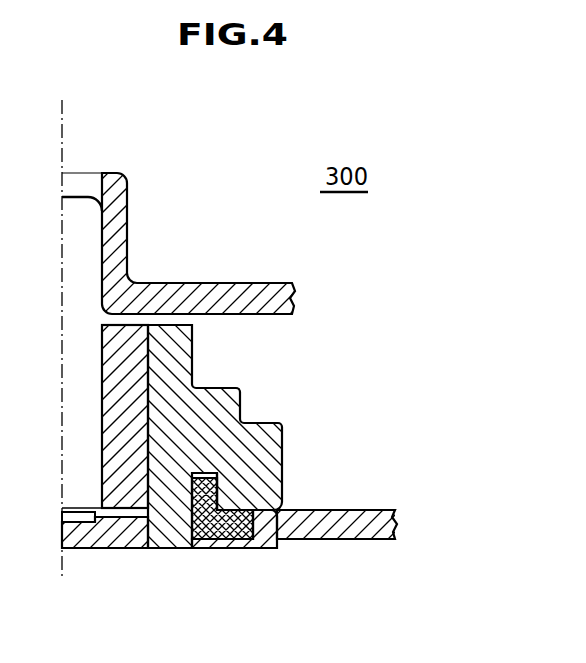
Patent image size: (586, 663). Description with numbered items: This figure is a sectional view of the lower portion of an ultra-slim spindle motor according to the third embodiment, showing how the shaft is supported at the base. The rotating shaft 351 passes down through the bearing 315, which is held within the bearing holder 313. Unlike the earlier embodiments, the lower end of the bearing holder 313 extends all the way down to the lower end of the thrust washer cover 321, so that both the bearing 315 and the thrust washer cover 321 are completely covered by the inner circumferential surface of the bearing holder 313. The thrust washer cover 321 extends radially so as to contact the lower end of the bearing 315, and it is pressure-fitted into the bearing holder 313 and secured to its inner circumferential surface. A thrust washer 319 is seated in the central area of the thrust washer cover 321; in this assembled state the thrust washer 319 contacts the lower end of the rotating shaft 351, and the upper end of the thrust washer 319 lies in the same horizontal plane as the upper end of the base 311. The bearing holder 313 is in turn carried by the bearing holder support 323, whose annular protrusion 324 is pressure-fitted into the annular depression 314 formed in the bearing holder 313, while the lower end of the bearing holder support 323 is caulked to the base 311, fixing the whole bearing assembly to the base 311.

The rotating shaft 351 is at (83, 210).
The bearing 315 is at (128, 338).
The thrust washer 319 is at (78, 523).
The thrust washer cover 321 is at (131, 548).
The bearing holder 313 is at (183, 497).
The annular depression 314 is at (217, 488).
The annular protrusion 324 is at (209, 520).
The bearing holder support 323 is at (245, 538).
The base 311 is at (336, 539).